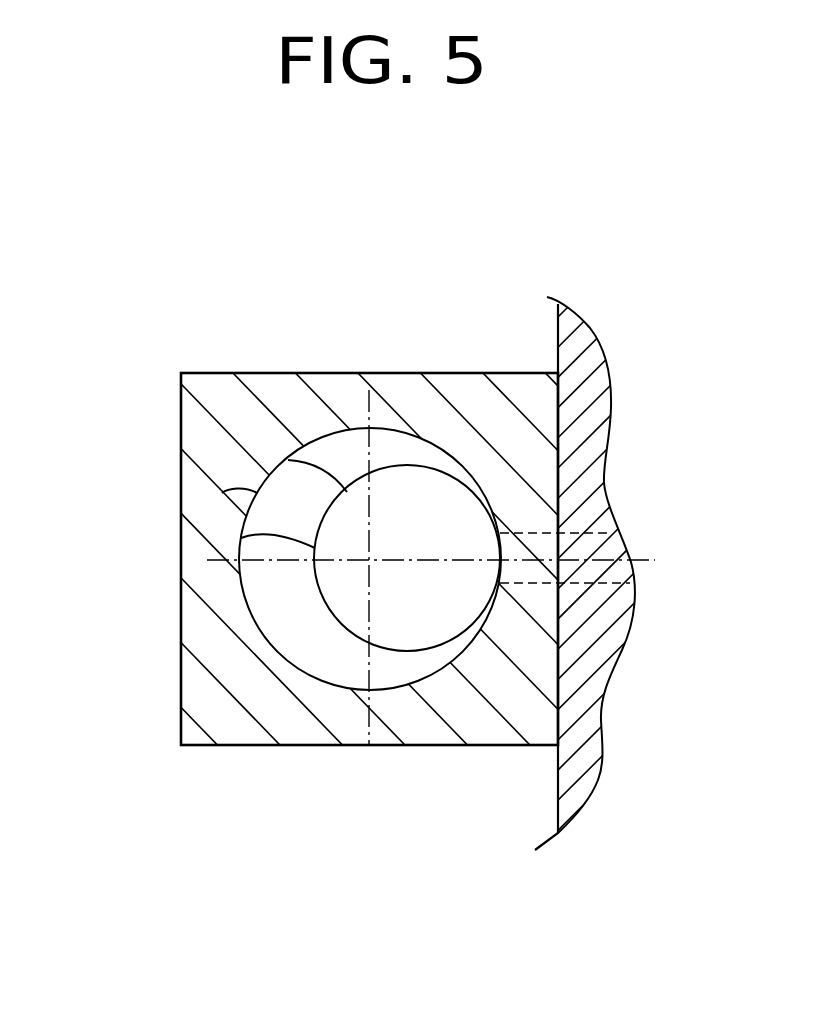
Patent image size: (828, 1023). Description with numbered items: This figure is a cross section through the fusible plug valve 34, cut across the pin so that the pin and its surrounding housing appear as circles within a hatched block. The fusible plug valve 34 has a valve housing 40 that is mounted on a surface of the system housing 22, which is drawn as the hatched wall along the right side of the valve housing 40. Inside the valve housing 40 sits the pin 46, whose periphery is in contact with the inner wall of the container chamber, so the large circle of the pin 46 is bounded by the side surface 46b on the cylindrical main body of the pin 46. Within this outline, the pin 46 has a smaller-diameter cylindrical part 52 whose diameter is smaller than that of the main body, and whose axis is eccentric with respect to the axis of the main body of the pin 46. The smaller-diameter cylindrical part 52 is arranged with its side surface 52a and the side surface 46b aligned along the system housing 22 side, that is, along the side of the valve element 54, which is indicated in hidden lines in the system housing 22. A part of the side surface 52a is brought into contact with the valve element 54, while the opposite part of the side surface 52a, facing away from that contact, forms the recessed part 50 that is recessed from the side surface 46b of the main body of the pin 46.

The system housing 22 is at (588, 340).
The fusible plug valve 34 is at (142, 763).
The valve housing 40 is at (333, 373).
The pin 46 is at (327, 687).
The side surface 46b is at (222, 493).
The recessed part 50 is at (241, 538).
The smaller-diameter cylindrical part 52 is at (431, 635).
The side surface 52a is at (288, 460).
The valve element 54 is at (577, 533).